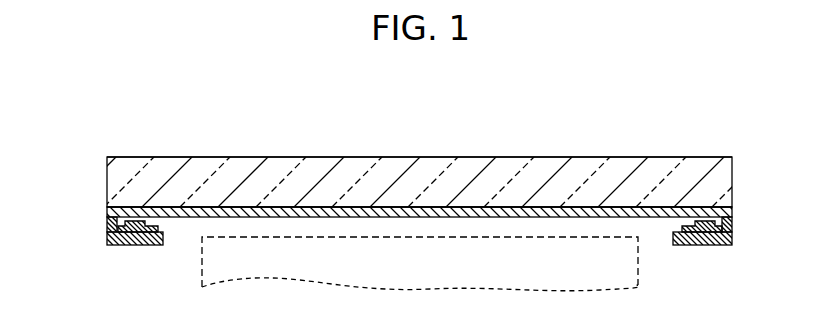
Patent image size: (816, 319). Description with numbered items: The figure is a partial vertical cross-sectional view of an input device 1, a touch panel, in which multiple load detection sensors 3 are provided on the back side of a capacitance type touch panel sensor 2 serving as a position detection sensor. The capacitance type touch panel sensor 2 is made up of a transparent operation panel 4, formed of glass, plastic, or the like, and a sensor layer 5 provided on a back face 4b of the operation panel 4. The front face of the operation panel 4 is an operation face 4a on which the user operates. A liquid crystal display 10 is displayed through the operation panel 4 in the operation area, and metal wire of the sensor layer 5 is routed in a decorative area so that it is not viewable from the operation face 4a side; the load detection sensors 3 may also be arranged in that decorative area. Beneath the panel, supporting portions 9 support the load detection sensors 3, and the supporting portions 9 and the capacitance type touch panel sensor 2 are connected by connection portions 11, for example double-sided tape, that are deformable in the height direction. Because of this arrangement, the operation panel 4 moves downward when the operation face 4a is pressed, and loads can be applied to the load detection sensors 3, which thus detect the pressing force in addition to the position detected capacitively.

The input device 1 is at (688, 143).
The capacitance type touch panel sensor 2 is at (740, 158).
The load detection sensor 3 is at (138, 246).
The operation panel 4 is at (107, 184).
The operation face 4a is at (276, 157).
The back face 4b is at (207, 212).
The sensor layer 5 is at (107, 211).
The supporting portion 9 is at (104, 244).
The liquid crystal display 10 is at (640, 268).
The connection portion 11 is at (107, 226).